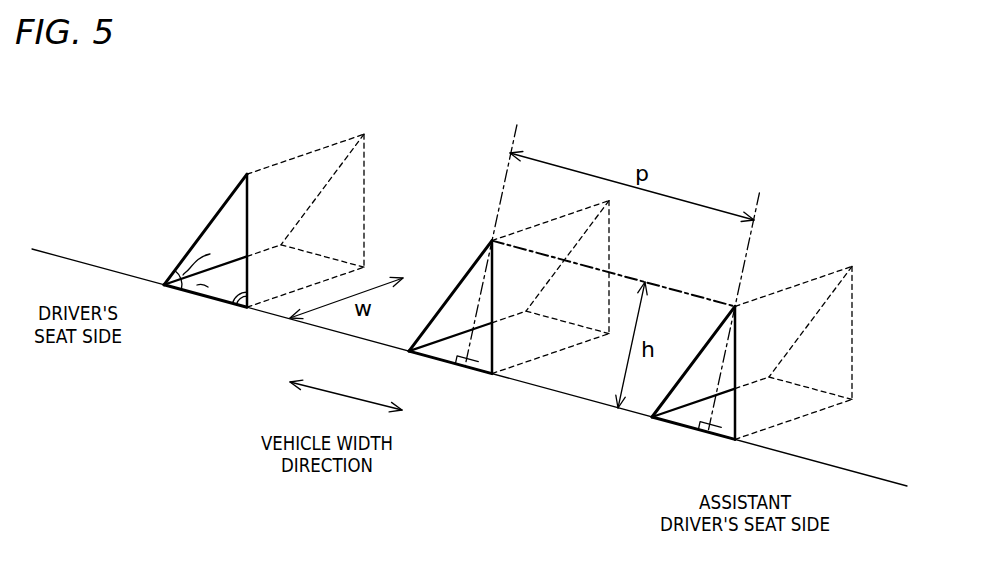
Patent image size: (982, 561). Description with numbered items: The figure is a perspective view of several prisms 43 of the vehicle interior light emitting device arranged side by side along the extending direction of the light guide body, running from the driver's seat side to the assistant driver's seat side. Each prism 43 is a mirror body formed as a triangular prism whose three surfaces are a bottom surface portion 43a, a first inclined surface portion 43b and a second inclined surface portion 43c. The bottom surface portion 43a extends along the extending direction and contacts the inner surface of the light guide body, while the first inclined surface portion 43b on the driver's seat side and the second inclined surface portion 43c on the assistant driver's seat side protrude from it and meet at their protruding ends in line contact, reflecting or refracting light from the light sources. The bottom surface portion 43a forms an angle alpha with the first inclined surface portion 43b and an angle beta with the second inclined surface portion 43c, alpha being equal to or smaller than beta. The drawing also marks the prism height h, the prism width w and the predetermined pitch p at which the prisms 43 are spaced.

The prism 43 is at (506, 252).
The bottom surface portion 43a is at (200, 288).
The first inclined surface portion 43b is at (293, 177).
The second inclined surface portion 43c is at (348, 203).